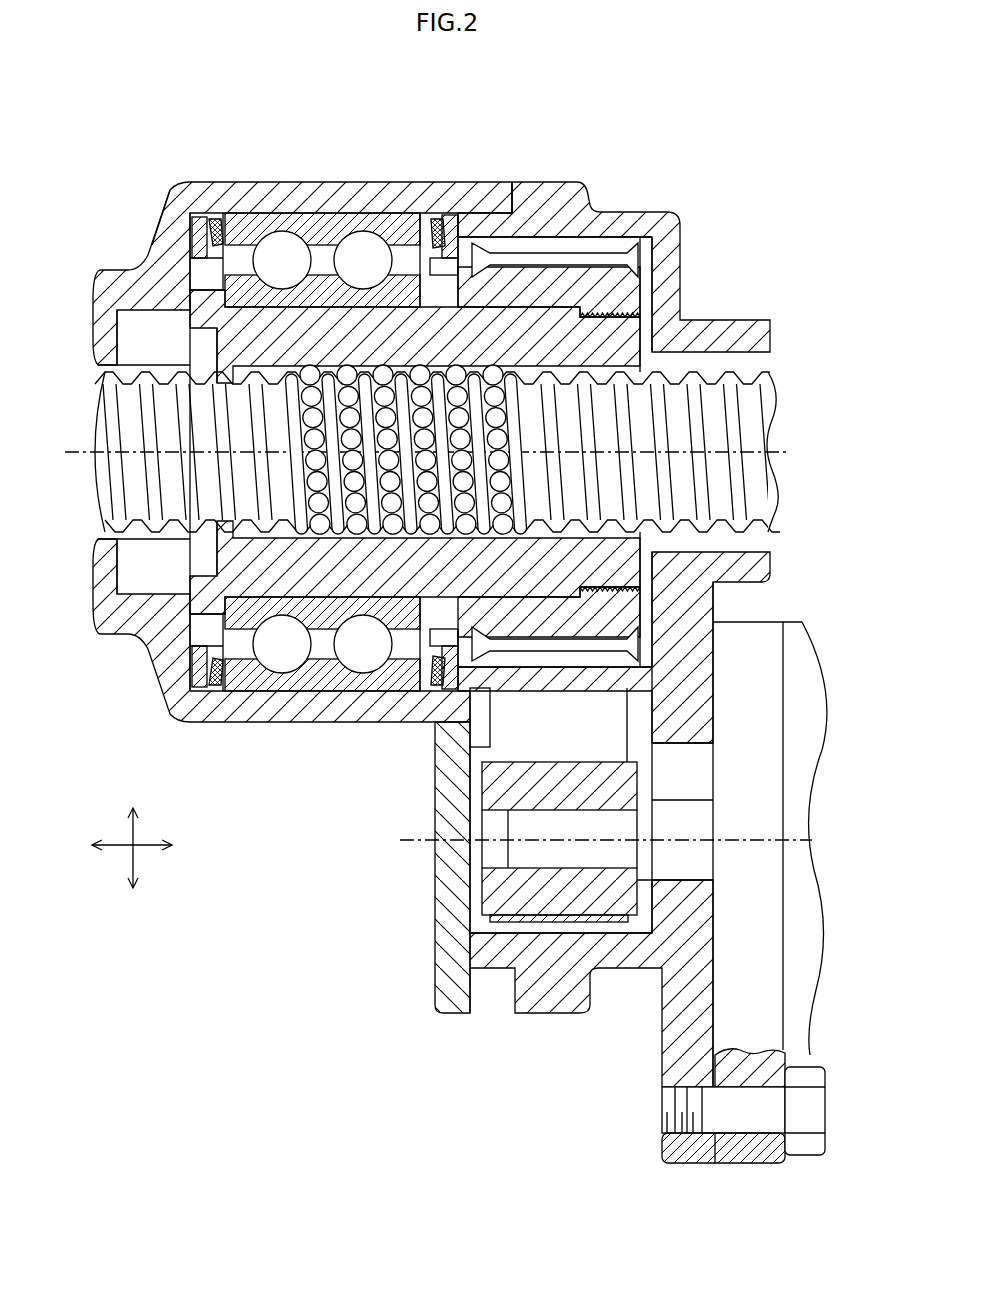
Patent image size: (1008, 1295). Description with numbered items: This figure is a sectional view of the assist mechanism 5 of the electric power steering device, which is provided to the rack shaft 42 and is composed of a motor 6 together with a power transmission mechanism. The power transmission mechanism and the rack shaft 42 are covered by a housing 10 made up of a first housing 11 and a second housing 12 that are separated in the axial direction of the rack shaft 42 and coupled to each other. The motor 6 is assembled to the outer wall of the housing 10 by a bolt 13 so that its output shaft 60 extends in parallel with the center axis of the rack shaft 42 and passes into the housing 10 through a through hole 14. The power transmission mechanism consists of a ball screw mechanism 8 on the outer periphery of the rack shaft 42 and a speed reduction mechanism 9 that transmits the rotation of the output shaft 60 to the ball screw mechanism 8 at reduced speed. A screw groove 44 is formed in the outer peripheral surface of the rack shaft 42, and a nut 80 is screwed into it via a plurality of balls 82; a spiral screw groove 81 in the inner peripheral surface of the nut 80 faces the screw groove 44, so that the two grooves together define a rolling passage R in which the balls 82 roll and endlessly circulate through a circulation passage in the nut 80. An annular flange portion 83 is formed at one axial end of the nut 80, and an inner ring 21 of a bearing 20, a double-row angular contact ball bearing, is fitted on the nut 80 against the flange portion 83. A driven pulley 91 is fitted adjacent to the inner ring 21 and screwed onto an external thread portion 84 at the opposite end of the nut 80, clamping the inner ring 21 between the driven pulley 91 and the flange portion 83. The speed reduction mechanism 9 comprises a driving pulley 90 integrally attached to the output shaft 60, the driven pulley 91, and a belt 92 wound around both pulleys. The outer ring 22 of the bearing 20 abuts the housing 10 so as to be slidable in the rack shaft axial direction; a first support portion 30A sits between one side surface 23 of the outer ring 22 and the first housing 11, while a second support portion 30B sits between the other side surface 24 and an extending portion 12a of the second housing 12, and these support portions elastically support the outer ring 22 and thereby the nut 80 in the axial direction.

The assist mechanism 5 is at (683, 150).
The motor 6 is at (768, 620).
The ball screw mechanism 8 is at (185, 343).
The speed reduction mechanism 9 is at (486, 748).
The housing 10 is at (575, 133).
The first housing 11 is at (502, 181).
The second housing 12 is at (560, 181).
The extending portion 12a is at (480, 215).
The bolt 13 is at (825, 1125).
The through hole 14 is at (703, 743).
The bearing 20 is at (300, 211).
The inner ring 21 is at (385, 243).
The outer ring 22 is at (345, 240).
The one side surface 23 is at (210, 236).
The other side surface 24 is at (407, 280).
The first support portion 30A is at (196, 212).
The second support portion 30B is at (447, 206).
The rack shaft 42 is at (130, 350).
The screw groove 44 is at (120, 410).
The output shaft 60 is at (690, 797).
The nut 80 is at (138, 310).
The screw groove 81 is at (293, 357).
The balls 82 is at (393, 432).
The flange portion 83 is at (170, 283).
The external thread portion 84 is at (620, 302).
The driving pulley 90 is at (475, 912).
The driven pulley 91 is at (602, 270).
The belt 92 is at (488, 733).
The rolling passage R is at (388, 435).